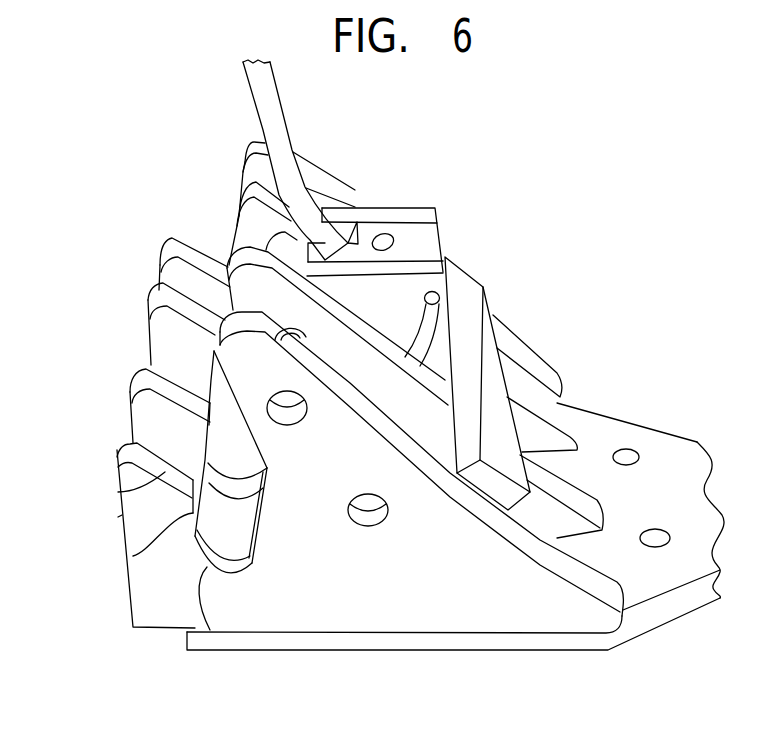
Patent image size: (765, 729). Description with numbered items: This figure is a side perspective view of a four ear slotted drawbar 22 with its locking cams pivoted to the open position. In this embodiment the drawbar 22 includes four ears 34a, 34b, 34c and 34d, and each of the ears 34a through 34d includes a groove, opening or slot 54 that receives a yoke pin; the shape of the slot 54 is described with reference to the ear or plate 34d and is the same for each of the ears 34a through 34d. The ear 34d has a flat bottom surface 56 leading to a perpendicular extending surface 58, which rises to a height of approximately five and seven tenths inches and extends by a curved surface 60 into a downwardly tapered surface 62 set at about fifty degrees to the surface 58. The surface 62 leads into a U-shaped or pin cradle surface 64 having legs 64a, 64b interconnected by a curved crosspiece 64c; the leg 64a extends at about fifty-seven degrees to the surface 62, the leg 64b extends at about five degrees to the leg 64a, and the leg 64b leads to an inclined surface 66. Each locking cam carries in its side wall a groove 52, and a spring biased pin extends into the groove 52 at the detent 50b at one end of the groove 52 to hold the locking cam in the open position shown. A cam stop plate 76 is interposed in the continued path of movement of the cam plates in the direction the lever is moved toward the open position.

The drawbar 22 is at (425, 180).
The cam stop plate 76 is at (336, 217).
The ear 34a is at (174, 240).
The ear 34b is at (157, 295).
The ear 34c is at (142, 373).
The ear 34d is at (137, 593).
The detent 50b is at (440, 293).
The groove 52 is at (432, 328).
The groove, opening or slot 54 is at (210, 520).
The flat bottom surface 56 is at (428, 633).
The perpendicular extending surface 58 is at (120, 516).
The curved surface 60 is at (121, 457).
The downwardly tapered surface 62 is at (118, 492).
The U-shaped or pin cradle surface 64 is at (247, 568).
The leg 64a is at (133, 556).
The leg 64b is at (265, 523).
The curved crosspiece 64c is at (210, 630).
The inclined surface 66 is at (255, 430).